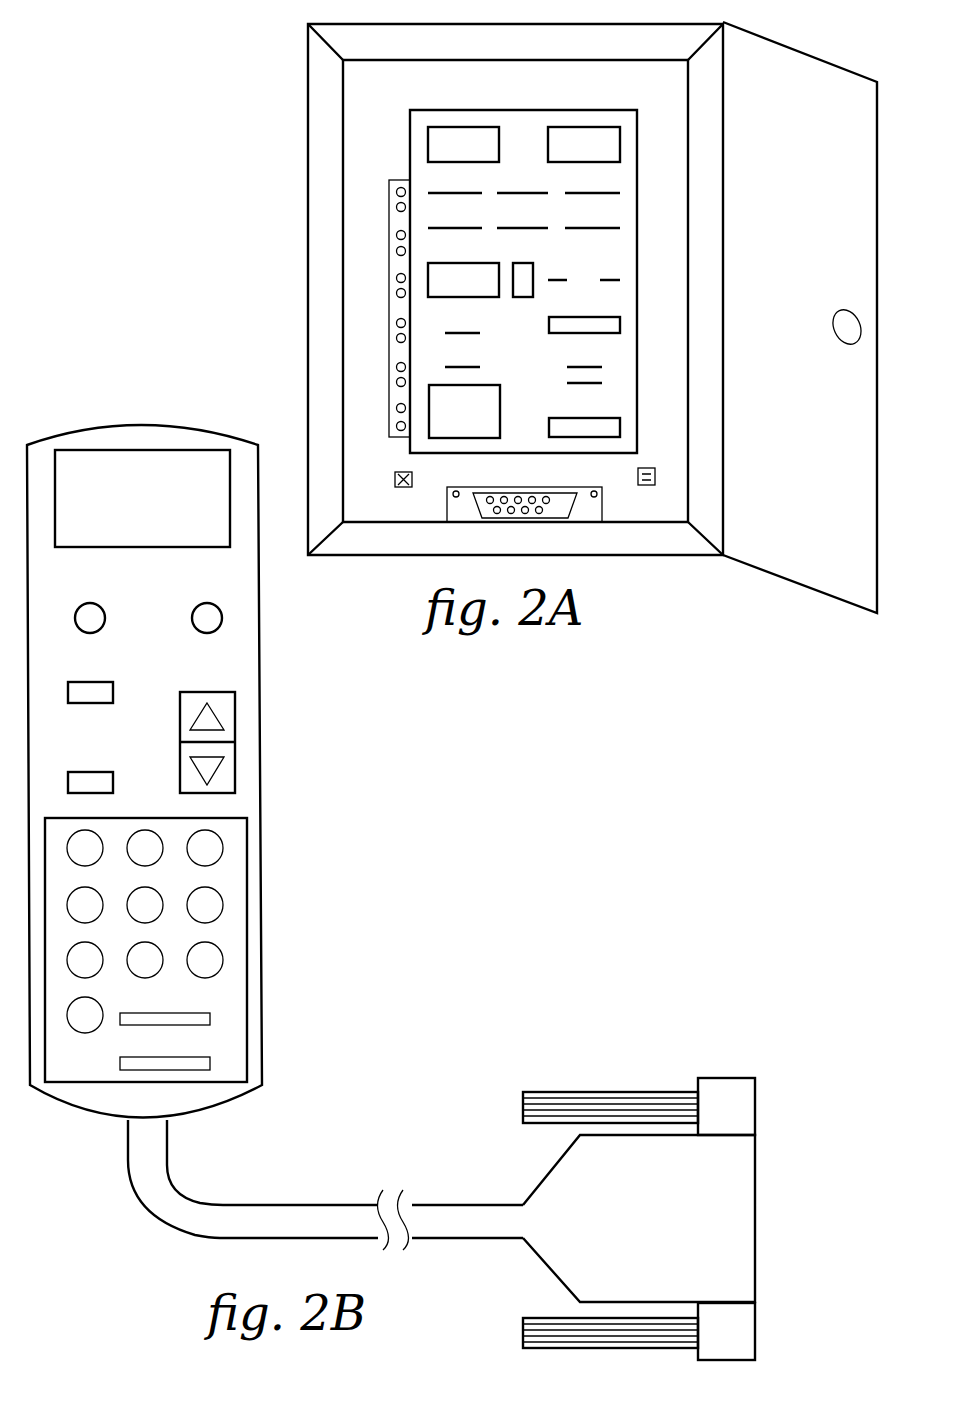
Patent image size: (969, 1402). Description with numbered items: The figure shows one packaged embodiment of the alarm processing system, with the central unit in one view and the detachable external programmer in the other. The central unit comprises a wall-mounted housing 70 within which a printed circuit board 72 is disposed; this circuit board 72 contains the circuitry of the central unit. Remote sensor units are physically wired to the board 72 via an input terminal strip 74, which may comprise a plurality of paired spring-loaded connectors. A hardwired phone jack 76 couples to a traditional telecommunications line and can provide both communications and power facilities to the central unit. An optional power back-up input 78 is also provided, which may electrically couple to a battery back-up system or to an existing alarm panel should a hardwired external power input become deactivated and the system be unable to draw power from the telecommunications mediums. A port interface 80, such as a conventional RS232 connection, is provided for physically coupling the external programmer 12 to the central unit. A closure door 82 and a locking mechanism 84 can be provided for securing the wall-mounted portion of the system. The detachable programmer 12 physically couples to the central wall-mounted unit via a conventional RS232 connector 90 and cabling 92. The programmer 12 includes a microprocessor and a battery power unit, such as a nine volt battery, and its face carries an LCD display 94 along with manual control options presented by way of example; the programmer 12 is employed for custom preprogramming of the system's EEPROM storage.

In FIG. 2B, the external programmer 12 is at (262, 713).
In FIG. 2A, the wall-mounted housing 70 is at (308, 160).
In FIG. 2A, the printed circuit board 72 is at (635, 185).
In FIG. 2A, the input terminal strip 74 is at (397, 180).
In FIG. 2A, the hardwired phone jack 76 is at (395, 478).
In FIG. 2A, the power back-up input 78 is at (645, 466).
In FIG. 2A, the port interface 80 is at (477, 503).
In FIG. 2A, the closure door 82 is at (812, 590).
In FIG. 2A, the locking mechanism 84 is at (832, 312).
In FIG. 2B, the RS232 connector 90 is at (632, 1135).
In FIG. 2B, the cabling 92 is at (450, 1200).
In FIG. 2B, the LCD display 94 is at (112, 450).